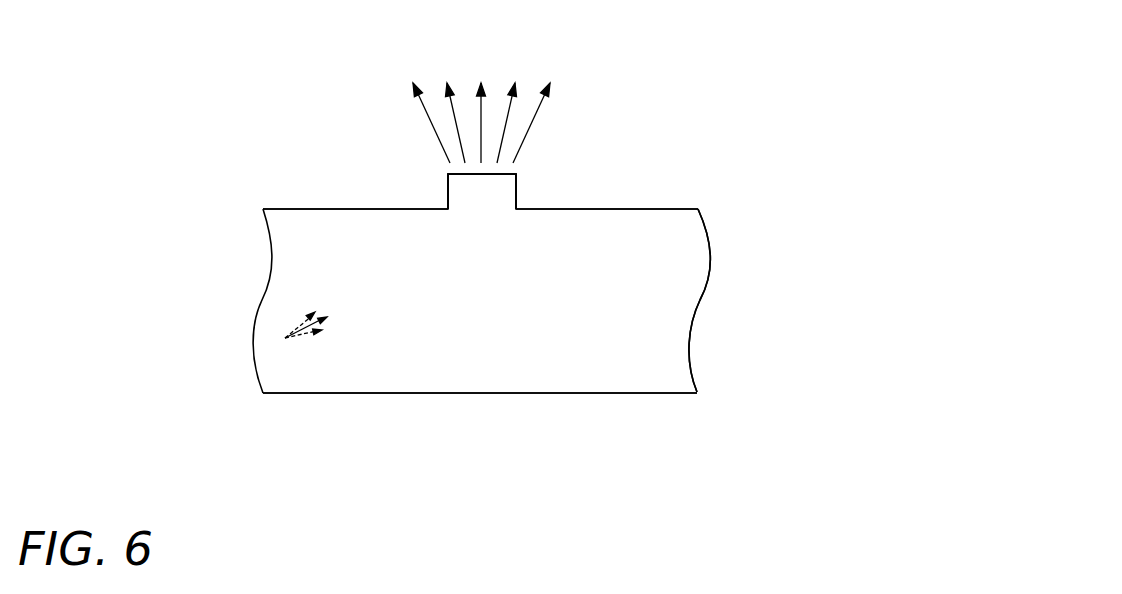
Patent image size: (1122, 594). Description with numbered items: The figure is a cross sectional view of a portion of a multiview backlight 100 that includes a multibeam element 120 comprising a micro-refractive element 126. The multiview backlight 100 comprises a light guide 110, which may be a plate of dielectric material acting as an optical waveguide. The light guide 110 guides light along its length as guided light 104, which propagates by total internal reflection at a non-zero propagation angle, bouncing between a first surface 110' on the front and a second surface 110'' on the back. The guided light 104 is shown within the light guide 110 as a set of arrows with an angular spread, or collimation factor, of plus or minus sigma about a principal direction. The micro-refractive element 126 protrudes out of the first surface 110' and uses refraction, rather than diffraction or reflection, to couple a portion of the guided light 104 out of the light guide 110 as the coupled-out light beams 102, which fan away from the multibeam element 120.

The multiview backlight 100 is at (813, 62).
The coupled-out light beams 102 is at (573, 107).
The guided light 104 is at (318, 342).
The light guide 110 is at (535, 283).
The first surface 110' is at (528, 178).
The second surface 110'' is at (531, 423).
The multibeam element 120 is at (403, 140).
The micro-refractive element 126 is at (482, 191).